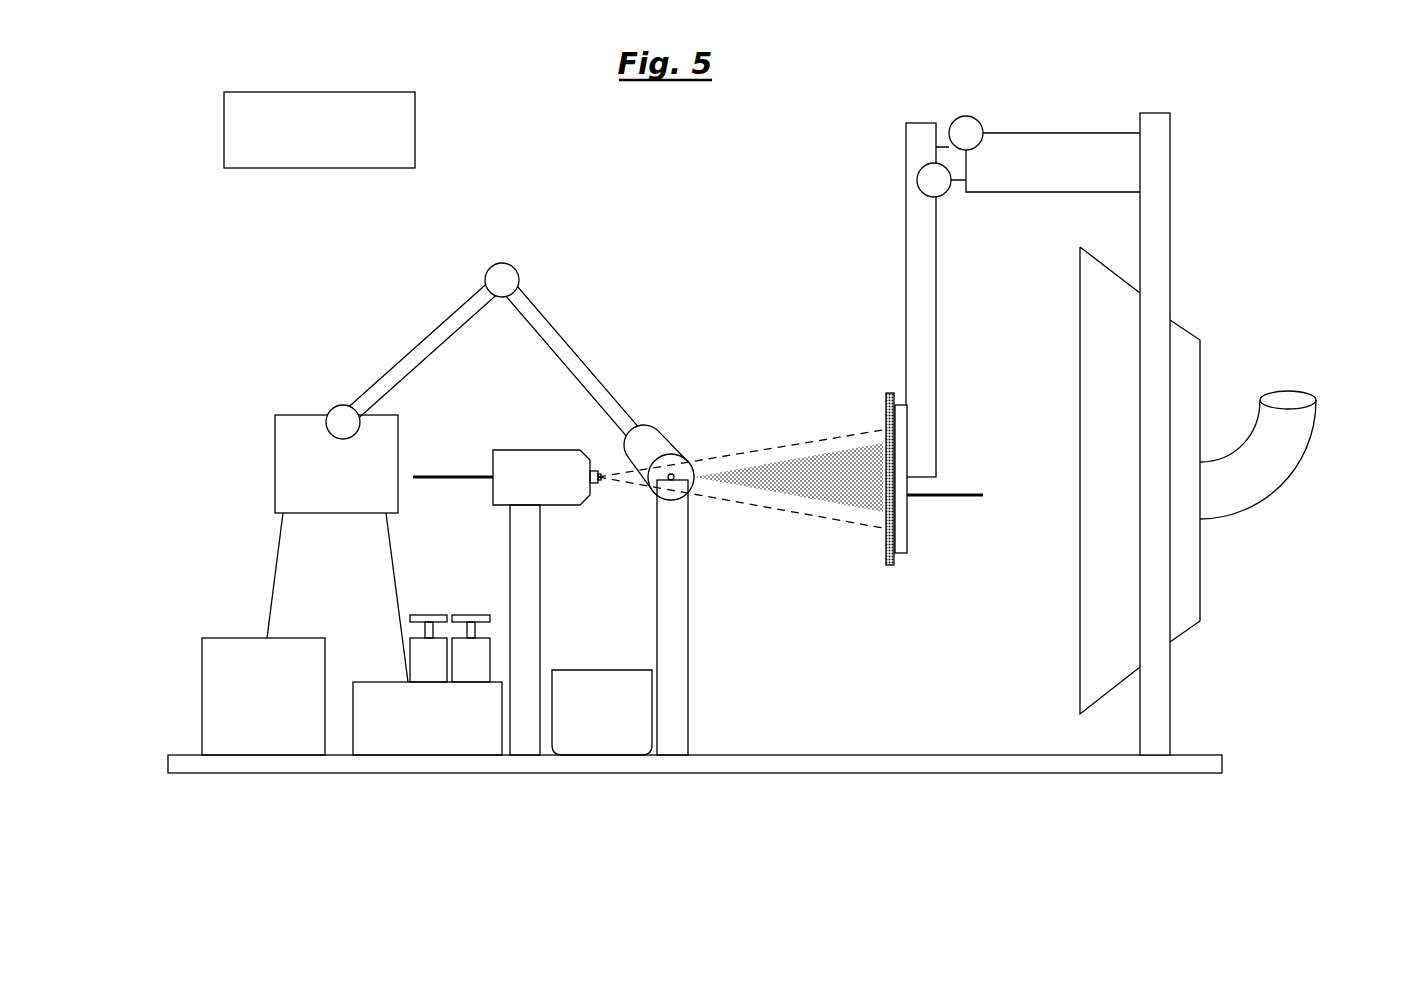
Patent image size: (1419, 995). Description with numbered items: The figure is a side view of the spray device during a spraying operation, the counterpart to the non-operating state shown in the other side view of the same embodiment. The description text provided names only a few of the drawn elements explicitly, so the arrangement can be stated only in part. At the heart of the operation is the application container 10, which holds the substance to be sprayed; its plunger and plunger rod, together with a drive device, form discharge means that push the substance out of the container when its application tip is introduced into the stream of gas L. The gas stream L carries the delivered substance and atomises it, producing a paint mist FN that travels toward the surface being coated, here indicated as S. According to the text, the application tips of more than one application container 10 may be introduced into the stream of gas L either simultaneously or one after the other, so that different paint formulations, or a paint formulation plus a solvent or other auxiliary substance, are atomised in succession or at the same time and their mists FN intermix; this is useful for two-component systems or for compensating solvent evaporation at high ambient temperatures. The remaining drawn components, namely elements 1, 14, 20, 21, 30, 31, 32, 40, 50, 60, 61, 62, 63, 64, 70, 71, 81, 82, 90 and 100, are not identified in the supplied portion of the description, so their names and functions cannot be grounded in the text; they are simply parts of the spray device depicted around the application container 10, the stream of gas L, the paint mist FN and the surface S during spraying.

The base 1 is at (918, 763).
The application container 10 is at (675, 403).
The laser emitting part 14 is at (675, 473).
The camera / imaging unit 20 is at (648, 468).
The camera support bar 21 is at (463, 480).
The robot 30 is at (395, 458).
The robot base legs 31 is at (272, 578).
The robot arm 32 is at (450, 330).
The camera support column 40 is at (545, 592).
The laser head support column 50 is at (675, 595).
The workpiece holding device 60 is at (1047, 434).
The holding plate 61 is at (1155, 665).
The holding column 62 is at (913, 295).
The workpiece plate 63 is at (907, 510).
The workpiece holder 64 is at (967, 493).
The exhaust device 70 is at (1281, 435).
The exhaust duct 71 is at (1263, 479).
The gas supply unit 81 is at (428, 737).
The power supply unit 82 is at (238, 737).
The container 90 is at (613, 723).
The controller 100 is at (238, 122).
The stream of gas L is at (727, 450).
The paint mist FN is at (847, 505).
The processing surface S is at (880, 568).